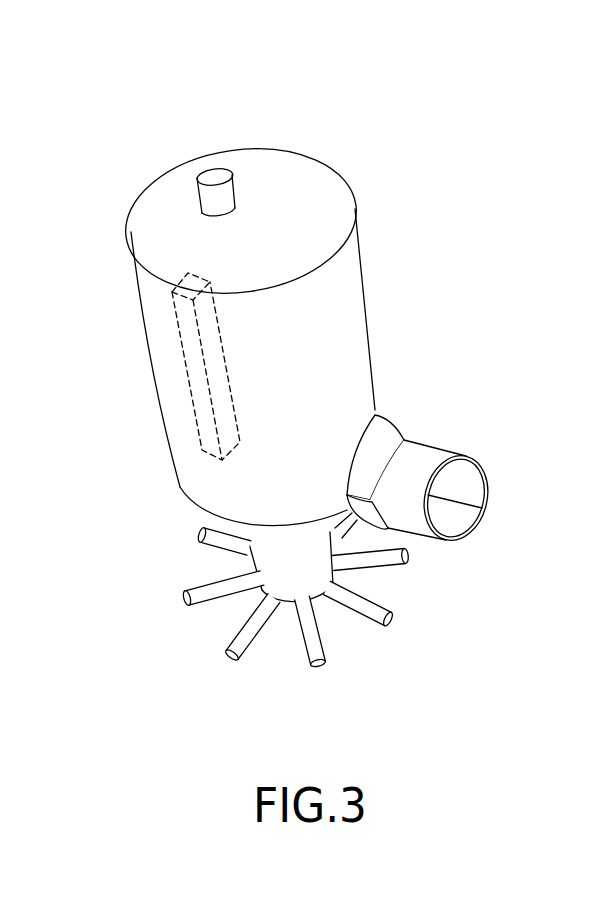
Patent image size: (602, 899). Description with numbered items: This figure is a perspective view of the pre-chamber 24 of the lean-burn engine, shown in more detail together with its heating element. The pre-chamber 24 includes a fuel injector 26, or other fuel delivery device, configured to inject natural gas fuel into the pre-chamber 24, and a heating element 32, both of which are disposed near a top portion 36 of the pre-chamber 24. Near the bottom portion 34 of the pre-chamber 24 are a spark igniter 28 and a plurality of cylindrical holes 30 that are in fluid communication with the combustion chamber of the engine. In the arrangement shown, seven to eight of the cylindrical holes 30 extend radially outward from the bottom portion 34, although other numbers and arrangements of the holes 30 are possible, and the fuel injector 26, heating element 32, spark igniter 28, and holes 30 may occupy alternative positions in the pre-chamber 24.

The pre-chamber 24 is at (366, 108).
The fuel injector 26 is at (212, 178).
The spark igniter 28 is at (466, 480).
The cylindrical holes 30 is at (377, 613).
The heating element 32 is at (175, 312).
The bottom portion 34 is at (174, 547).
The top portion 36 is at (393, 191).